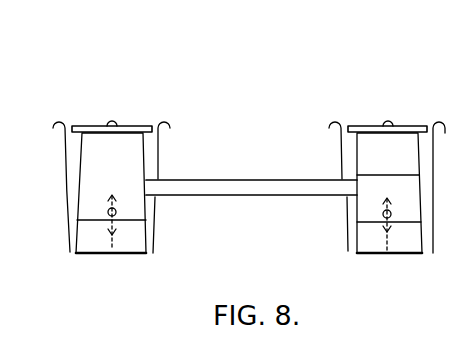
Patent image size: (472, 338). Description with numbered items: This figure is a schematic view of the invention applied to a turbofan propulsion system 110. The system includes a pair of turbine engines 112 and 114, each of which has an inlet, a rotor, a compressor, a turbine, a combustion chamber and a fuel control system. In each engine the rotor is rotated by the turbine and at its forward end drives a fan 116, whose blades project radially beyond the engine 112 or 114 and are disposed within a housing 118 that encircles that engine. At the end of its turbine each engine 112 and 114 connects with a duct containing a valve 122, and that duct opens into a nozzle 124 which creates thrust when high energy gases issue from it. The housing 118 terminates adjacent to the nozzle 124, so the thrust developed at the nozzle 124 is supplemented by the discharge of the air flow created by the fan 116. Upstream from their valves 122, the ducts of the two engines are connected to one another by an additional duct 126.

The turbofan propulsion system 110 is at (265, 90).
The turbine engine 112 is at (92, 158).
The turbine engine 114 is at (368, 153).
The fan 116 is at (151, 127).
The housing 118 is at (160, 159).
The valve 122 is at (117, 209).
The nozzle 124 is at (113, 254).
The additional duct 126 is at (252, 197).